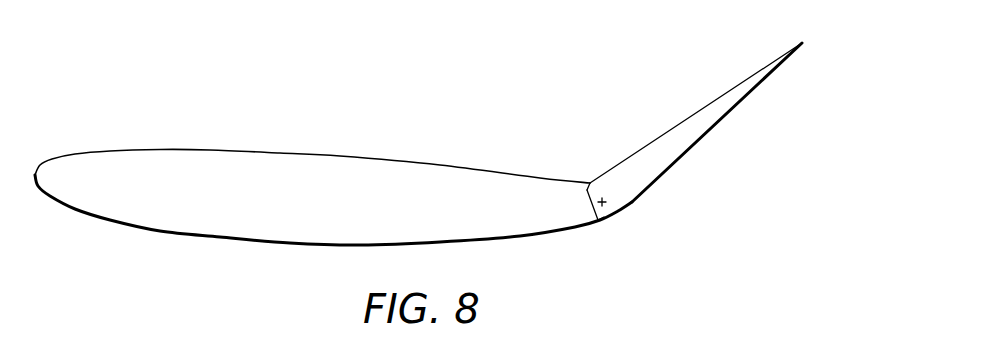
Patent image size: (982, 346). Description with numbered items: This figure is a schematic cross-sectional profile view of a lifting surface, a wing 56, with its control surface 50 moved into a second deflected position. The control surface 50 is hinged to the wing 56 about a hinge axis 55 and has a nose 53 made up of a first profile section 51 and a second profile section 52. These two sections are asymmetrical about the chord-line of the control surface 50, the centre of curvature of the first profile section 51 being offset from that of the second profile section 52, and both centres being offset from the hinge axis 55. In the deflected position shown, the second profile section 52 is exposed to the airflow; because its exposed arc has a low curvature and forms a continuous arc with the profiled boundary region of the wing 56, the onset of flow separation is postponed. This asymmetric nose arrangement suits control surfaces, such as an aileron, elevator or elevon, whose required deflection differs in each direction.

The control surface 50 is at (723, 110).
The first profile section 51 is at (594, 180).
The second profile section 52 is at (610, 218).
The nose 53 is at (602, 210).
The hinge axis 55 is at (607, 200).
The wing 56 is at (232, 148).